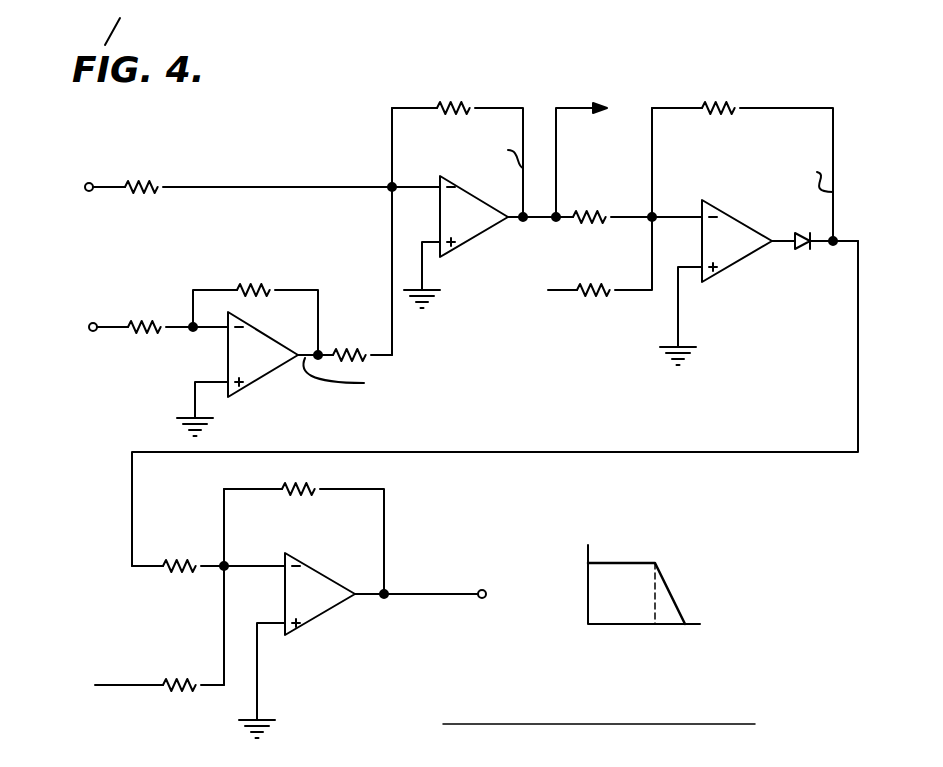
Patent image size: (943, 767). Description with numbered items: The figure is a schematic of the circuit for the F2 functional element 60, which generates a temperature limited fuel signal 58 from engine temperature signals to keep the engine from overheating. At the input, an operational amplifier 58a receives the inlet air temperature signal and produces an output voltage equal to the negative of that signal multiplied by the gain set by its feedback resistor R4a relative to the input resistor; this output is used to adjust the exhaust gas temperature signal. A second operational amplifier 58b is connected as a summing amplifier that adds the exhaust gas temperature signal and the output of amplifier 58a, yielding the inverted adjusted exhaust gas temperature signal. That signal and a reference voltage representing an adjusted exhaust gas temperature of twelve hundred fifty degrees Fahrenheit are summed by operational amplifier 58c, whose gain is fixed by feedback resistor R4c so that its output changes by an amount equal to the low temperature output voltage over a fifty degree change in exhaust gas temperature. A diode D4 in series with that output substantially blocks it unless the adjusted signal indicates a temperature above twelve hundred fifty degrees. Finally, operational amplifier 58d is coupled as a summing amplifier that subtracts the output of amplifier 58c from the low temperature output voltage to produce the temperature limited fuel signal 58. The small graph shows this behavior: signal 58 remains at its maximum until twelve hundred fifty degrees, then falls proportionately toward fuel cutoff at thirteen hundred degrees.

The temperature limited fuel signal 58 is at (425, 594).
The operational amplifier 58a is at (249, 352).
The operational amplifier 58b is at (483, 240).
The operational amplifier 58c is at (742, 225).
The operational amplifier 58d is at (336, 616).
The F2 functional element 60 is at (442, 411).
The diode D4 is at (803, 249).
The feedback resistor R4a is at (255, 311).
The feedback resistor R4c is at (742, 163).